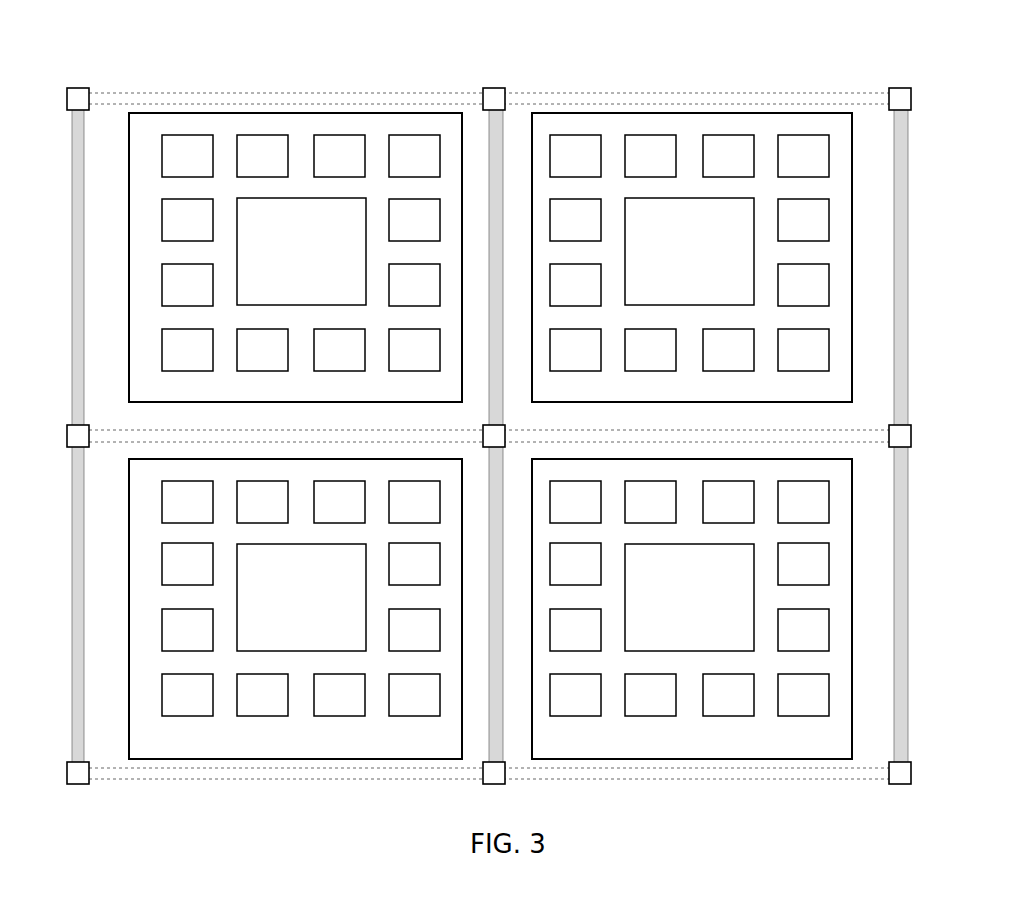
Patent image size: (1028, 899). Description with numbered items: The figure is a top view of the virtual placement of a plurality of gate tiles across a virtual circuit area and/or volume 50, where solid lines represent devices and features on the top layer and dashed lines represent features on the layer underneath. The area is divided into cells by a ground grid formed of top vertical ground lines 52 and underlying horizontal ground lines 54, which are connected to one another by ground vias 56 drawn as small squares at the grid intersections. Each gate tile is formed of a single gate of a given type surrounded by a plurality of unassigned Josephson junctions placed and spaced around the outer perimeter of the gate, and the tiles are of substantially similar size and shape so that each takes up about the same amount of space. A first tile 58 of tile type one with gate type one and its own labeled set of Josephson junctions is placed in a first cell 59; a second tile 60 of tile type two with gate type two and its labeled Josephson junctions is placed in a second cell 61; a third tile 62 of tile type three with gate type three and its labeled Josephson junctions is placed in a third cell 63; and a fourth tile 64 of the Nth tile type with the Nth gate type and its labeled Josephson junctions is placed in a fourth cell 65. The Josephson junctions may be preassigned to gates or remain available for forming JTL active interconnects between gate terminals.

The virtual circuit area and/or volume 50 is at (923, 50).
The top vertical ground lines 52 is at (74, 306).
The underlying horizontal ground lines 54 is at (628, 93).
The ground vias 56 is at (78, 88).
The first tile 58 is at (129, 183).
The first cell 59 is at (114, 257).
The second tile 60 is at (852, 162).
The second cell 61 is at (889, 270).
The third tile 62 is at (129, 541).
The third cell 63 is at (114, 626).
The fourth tile 64 is at (852, 504).
The fourth cell 65 is at (889, 626).